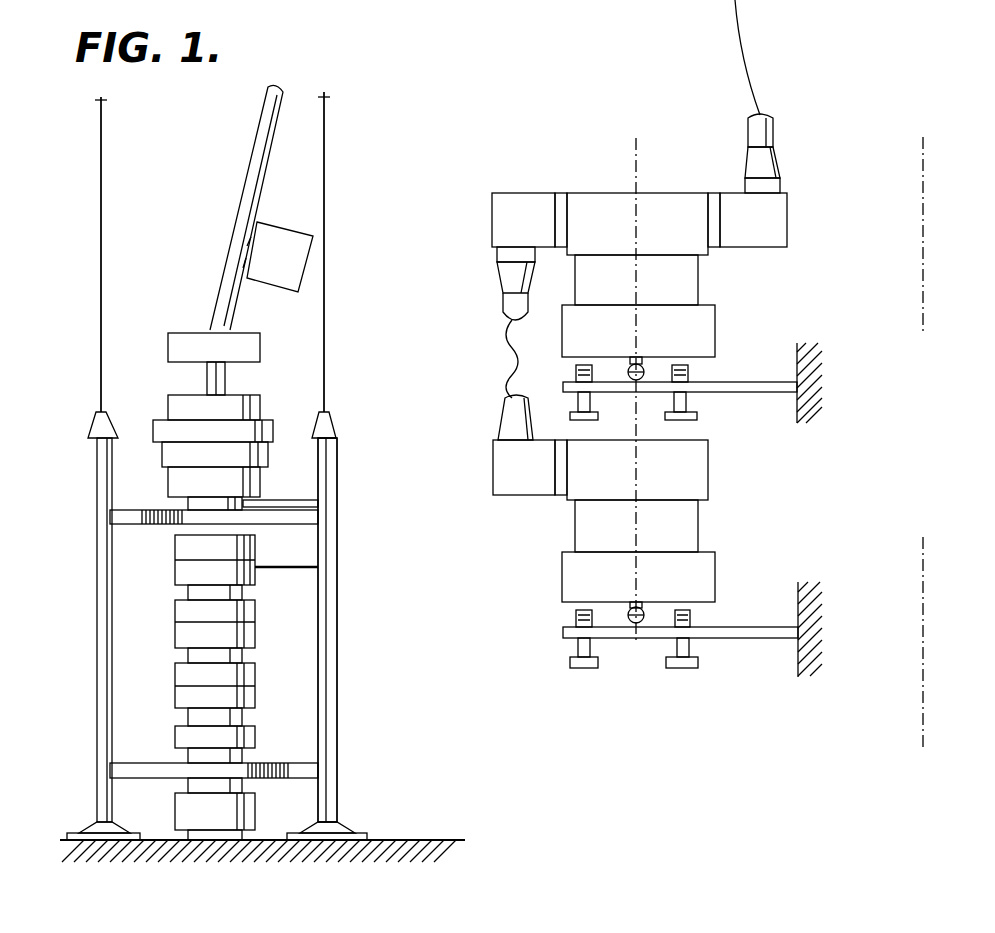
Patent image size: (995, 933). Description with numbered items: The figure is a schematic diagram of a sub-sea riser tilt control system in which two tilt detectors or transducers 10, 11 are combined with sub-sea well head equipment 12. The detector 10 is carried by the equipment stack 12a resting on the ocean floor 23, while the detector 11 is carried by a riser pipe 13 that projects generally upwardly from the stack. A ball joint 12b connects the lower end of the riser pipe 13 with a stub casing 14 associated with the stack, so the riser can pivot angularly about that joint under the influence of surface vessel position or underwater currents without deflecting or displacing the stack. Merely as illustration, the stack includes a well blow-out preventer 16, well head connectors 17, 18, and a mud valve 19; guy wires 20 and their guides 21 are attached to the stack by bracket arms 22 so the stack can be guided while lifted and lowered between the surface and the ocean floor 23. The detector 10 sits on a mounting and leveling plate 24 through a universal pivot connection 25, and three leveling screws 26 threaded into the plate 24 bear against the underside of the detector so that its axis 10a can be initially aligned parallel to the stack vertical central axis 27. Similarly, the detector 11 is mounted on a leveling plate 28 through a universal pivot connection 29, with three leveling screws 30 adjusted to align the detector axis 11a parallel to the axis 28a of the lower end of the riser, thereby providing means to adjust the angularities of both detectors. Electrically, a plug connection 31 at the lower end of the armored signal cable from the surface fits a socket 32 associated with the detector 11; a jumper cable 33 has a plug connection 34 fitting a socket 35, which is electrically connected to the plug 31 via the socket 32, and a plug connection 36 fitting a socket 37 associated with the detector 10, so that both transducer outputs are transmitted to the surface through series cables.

The tilt detector or transducer 10 is at (300, 546).
The detector axis 10a is at (633, 527).
The tilt detector or transducer 11 is at (296, 262).
The detector axis 11a is at (633, 150).
The sub-sea well head equipment 12 is at (86, 621).
The equipment stack 12a is at (272, 480).
The ball joint 12b is at (248, 347).
The riser pipe 13 is at (238, 204).
The stub casing 14 is at (207, 376).
The well blow-out preventer 16 is at (168, 481).
The well head connector 17 is at (186, 810).
The well head connector 18 is at (175, 568).
The mud valve 19 is at (255, 693).
The guy wires 20 is at (100, 282).
The guides 21 is at (337, 615).
The bracket arms 22 is at (128, 524).
The ocean floor 23 is at (408, 840).
The mounting and leveling plate 24 is at (746, 634).
The universal pivot connection 25 is at (632, 622).
The leveling screws 26 is at (570, 660).
The stack vertical central axis 27 is at (923, 712).
The mounting or leveling plate 28 is at (742, 392).
The axis of the lower end of the riser 28a is at (922, 183).
The universal pivot connection 29 is at (634, 382).
The leveling screws 30 is at (576, 372).
The plug connection 31 is at (782, 178).
The socket 32 is at (775, 228).
The jumper cable 33 is at (504, 360).
The plug connection 34 is at (497, 278).
The socket 35 is at (505, 213).
The plug connection 36 is at (498, 431).
The socket 37 is at (497, 475).